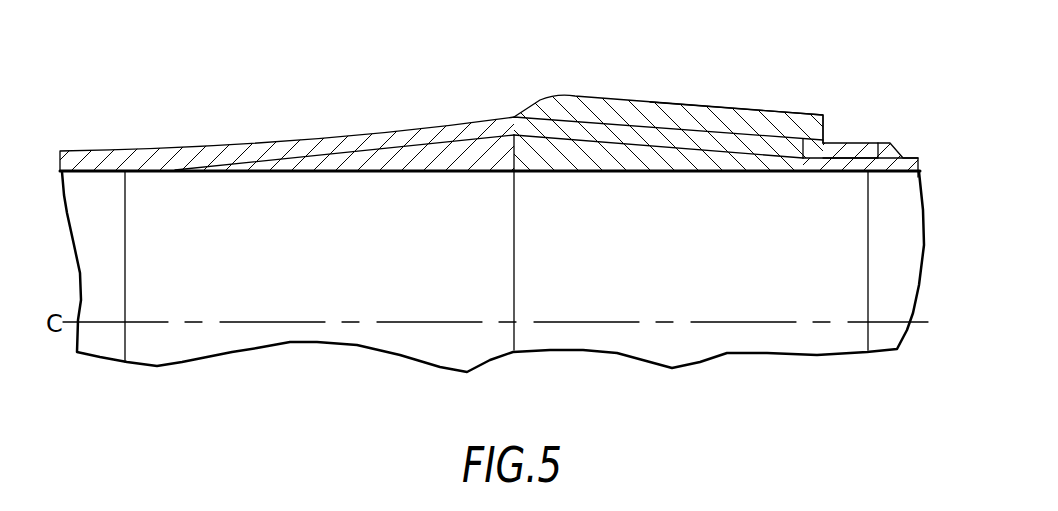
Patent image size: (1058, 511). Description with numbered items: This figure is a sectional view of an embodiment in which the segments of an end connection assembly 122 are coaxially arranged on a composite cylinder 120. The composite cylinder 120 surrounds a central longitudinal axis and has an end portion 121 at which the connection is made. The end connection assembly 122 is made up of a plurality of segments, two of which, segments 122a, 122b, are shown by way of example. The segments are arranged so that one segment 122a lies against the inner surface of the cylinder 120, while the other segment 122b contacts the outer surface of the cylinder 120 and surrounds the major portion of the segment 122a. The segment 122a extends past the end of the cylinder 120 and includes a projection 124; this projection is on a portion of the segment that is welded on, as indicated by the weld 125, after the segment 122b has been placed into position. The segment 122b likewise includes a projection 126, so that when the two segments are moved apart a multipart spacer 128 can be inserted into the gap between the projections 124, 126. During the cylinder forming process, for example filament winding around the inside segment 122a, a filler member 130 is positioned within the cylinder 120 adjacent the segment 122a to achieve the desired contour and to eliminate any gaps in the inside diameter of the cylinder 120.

The composite cylinder 120 is at (157, 148).
The end portion 121 is at (512, 110).
The end connection assembly 122 is at (694, 97).
The segment 122a is at (588, 150).
The segment 122b is at (755, 110).
The projection 124 is at (886, 150).
The weld 125 is at (868, 175).
The projection 126 is at (813, 160).
The multipart spacer 128 is at (845, 141).
The filler member 130 is at (418, 152).